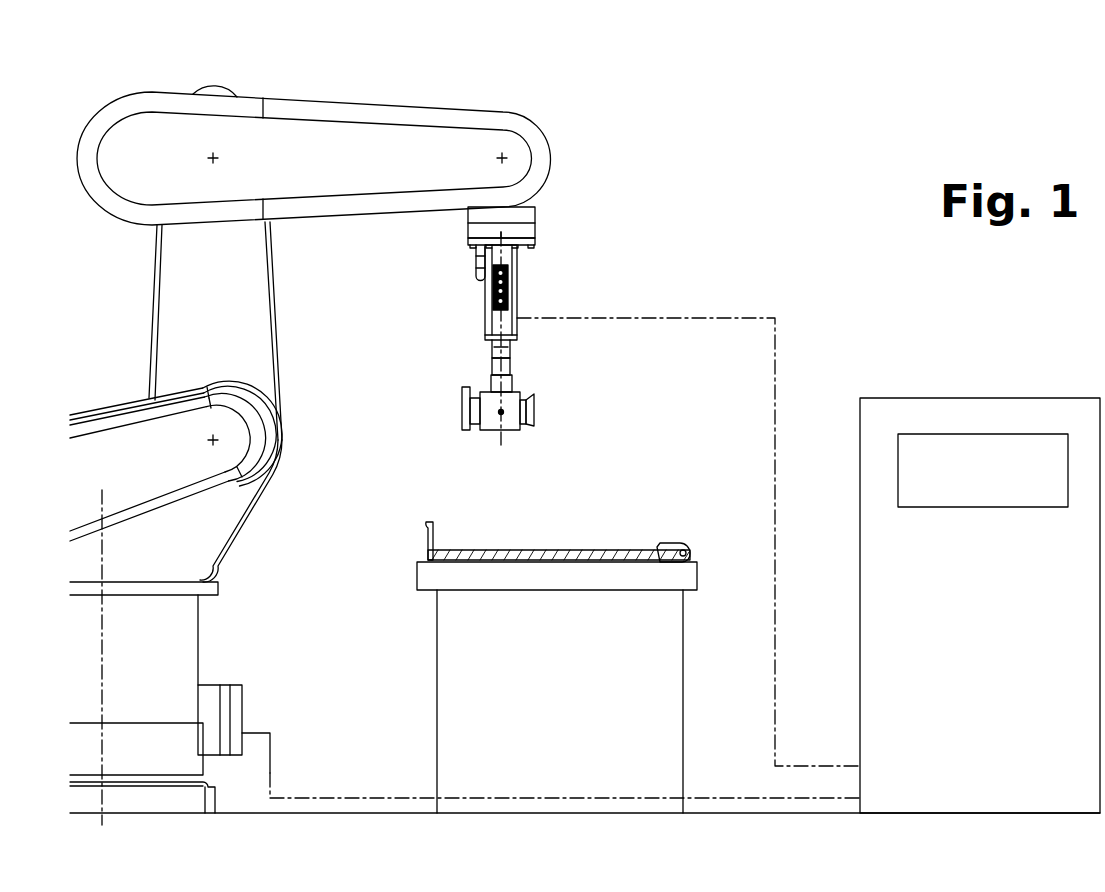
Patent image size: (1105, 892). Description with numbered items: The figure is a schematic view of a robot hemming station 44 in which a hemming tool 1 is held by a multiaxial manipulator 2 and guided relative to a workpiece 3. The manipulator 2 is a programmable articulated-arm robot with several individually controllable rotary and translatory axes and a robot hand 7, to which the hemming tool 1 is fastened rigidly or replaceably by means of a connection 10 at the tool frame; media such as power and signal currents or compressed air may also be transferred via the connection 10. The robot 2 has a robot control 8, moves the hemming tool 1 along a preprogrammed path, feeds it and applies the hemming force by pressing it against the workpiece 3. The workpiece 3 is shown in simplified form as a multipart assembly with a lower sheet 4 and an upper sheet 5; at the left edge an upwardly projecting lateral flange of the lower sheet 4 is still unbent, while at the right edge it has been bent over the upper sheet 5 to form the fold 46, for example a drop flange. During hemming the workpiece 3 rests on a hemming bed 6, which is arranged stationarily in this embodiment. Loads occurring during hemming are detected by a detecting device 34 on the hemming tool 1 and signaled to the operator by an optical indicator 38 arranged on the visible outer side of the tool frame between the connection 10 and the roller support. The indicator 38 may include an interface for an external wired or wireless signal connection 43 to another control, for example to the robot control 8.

The hemming tool 1 is at (512, 368).
The multiaxial manipulator 2 is at (218, 252).
The workpiece 3 is at (416, 547).
The lower sheet 4 is at (425, 525).
The upper sheet 5 is at (573, 550).
The hemming bed 6 is at (553, 568).
The robot hand 7 is at (530, 211).
The robot control 8 is at (1040, 420).
The connection 10 is at (471, 246).
The detecting device 34 is at (524, 309).
The indicator 38 is at (494, 288).
The signal connection 43 is at (706, 313).
The robot hemming station 44 is at (766, 234).
The fold 46 is at (683, 545).